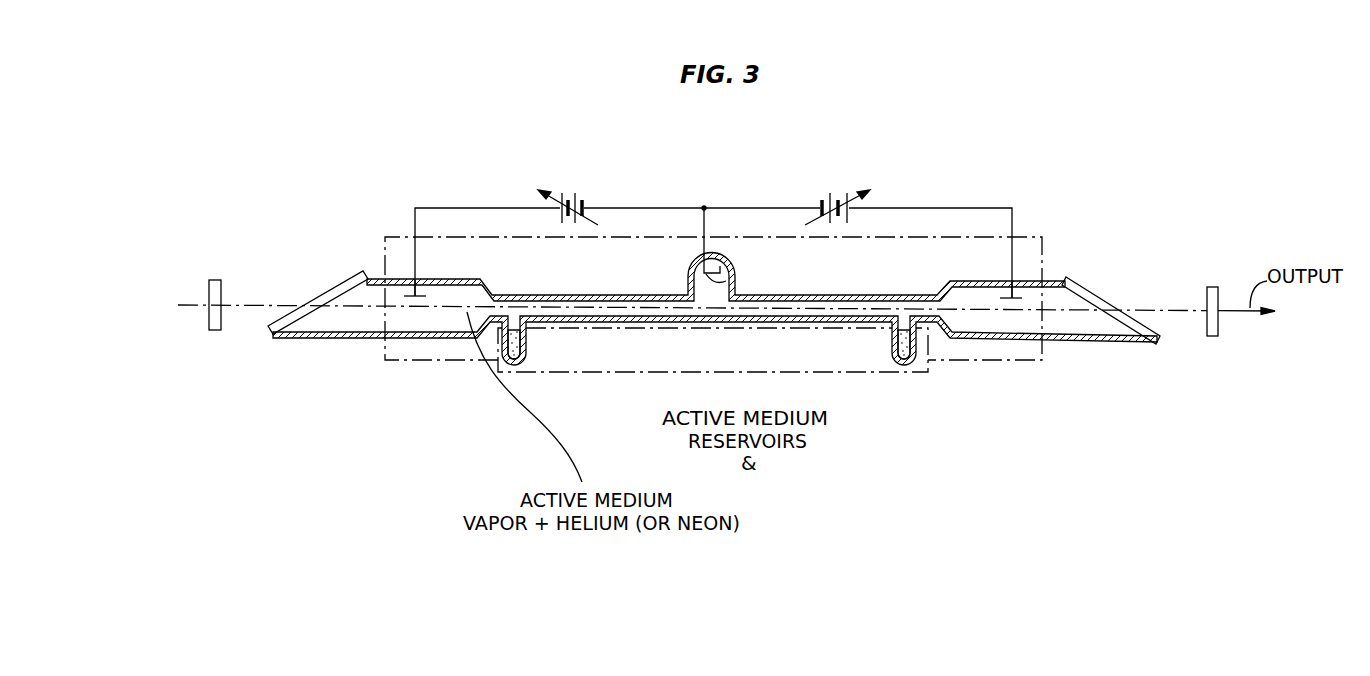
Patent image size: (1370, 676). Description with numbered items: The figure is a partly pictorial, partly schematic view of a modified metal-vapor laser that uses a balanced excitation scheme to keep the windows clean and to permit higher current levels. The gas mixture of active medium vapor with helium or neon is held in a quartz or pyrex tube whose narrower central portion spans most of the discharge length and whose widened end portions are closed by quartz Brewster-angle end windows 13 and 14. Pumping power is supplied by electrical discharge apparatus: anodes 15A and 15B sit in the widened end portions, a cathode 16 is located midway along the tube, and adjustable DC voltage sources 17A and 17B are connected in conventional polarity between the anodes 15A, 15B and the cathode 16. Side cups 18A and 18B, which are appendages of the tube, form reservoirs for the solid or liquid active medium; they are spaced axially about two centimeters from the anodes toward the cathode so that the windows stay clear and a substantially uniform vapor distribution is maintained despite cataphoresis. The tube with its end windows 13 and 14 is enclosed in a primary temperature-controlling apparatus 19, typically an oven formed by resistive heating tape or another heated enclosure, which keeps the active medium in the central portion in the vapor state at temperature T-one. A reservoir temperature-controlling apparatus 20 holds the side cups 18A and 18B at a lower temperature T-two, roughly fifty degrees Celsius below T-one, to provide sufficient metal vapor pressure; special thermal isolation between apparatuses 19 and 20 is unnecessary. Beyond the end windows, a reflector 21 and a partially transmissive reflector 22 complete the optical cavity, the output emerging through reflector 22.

The end window 13 is at (320, 292).
The end window 14 is at (1095, 290).
The anode 15A is at (423, 293).
The anode 15B is at (1003, 294).
The cathode 16 is at (733, 279).
The adjustable DC voltage source 17A is at (572, 196).
The adjustable DC voltage source 17B is at (832, 196).
The side cup 18A is at (530, 345).
The side cup 18B is at (897, 348).
The primary temperature-controlling apparatus 19 is at (418, 360).
The reservoir temperature-controlling apparatus 20 is at (907, 373).
The reflector 21 is at (215, 280).
The partially transmissive reflector 22 is at (1212, 287).